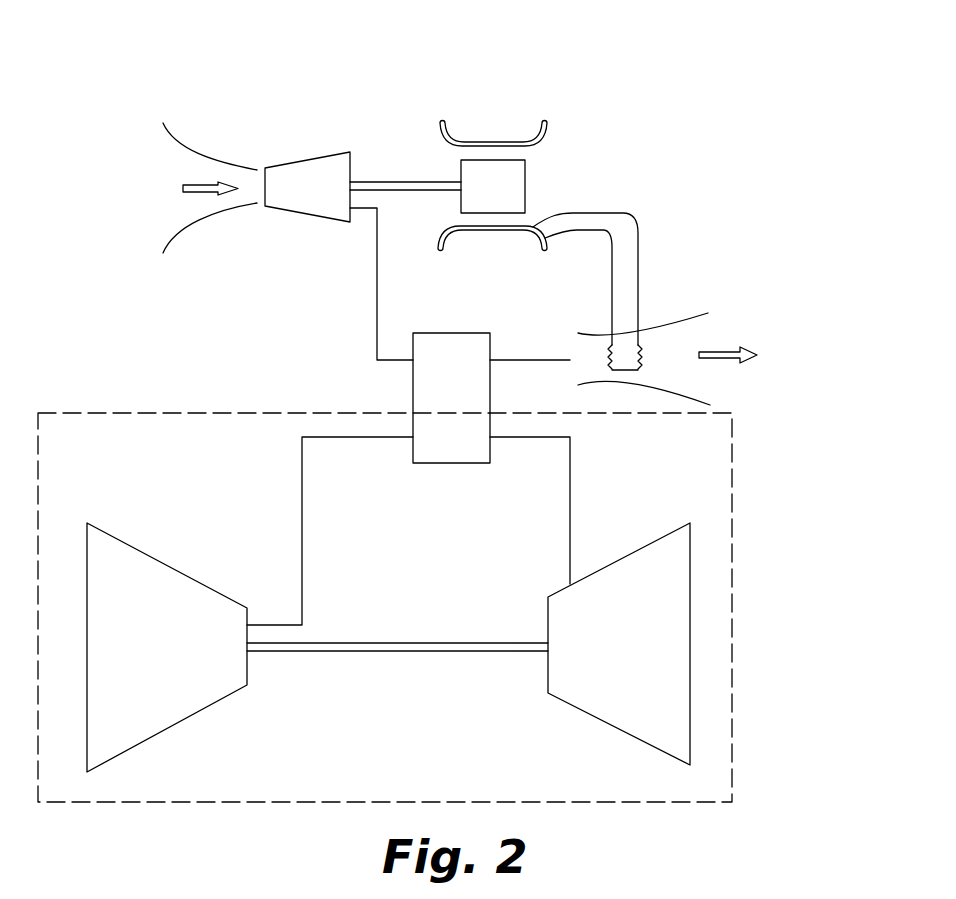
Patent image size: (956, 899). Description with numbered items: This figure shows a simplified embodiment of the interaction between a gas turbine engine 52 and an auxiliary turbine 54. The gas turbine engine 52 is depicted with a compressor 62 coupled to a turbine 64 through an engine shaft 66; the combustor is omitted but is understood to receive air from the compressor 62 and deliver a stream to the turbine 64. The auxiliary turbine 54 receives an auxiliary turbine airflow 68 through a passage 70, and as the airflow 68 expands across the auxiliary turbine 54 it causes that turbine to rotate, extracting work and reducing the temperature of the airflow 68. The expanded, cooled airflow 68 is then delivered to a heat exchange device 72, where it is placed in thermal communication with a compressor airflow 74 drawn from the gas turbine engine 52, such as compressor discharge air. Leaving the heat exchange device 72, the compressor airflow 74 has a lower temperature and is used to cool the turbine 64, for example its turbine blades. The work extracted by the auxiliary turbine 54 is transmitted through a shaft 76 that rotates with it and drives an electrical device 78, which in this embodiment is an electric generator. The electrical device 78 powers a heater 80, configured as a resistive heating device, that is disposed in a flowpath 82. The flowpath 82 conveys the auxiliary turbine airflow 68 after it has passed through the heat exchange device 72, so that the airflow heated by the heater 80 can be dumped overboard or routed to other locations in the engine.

The gas turbine engine 52 is at (733, 482).
The auxiliary turbine 54 is at (337, 100).
The compressor 62 is at (131, 548).
The turbine 64 is at (595, 720).
The engine shaft 66 is at (352, 652).
The auxiliary turbine airflow 68 is at (203, 187).
The passage 70 is at (217, 212).
The heat exchange device 72 is at (420, 463).
The compressor airflow 74 is at (302, 483).
The shaft 76 is at (395, 181).
The electrical device 78 is at (508, 112).
The heater 80 is at (643, 348).
The flowpath 82 is at (734, 348).